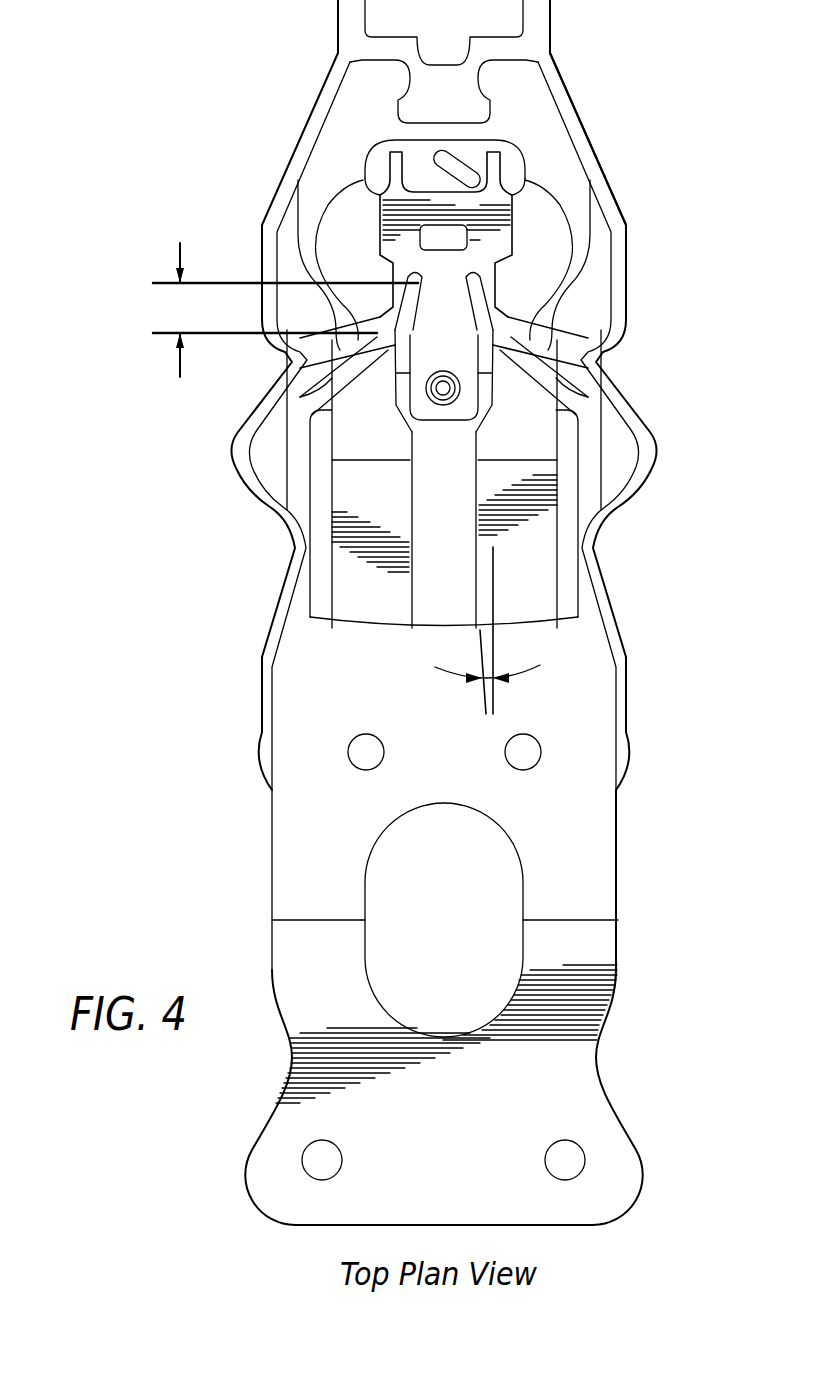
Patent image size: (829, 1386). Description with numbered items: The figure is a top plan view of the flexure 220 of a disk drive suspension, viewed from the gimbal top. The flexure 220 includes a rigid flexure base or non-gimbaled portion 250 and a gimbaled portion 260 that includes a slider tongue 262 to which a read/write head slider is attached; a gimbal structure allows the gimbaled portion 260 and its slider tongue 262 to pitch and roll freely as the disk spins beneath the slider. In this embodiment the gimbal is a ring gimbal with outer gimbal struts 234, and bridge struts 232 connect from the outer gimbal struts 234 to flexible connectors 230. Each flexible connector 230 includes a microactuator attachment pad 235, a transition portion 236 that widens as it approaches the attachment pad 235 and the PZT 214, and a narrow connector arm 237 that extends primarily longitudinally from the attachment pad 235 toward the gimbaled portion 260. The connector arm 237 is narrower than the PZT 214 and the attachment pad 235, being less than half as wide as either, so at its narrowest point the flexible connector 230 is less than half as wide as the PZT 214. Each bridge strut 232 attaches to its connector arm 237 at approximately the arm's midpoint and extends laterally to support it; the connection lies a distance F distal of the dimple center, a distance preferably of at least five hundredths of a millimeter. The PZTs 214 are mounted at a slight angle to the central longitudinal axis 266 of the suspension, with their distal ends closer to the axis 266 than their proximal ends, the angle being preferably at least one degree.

The PZT 214 is at (548, 565).
The flexure 220 is at (240, 551).
The flexible connector 230 is at (502, 385).
The bridge strut 232 is at (540, 320).
The outer gimbal strut 234 is at (598, 180).
The microactuator attachment pad 235 is at (523, 443).
The transition portion 236 is at (517, 413).
The connector arm 237 is at (495, 292).
The non-gimbaled portion 250 is at (272, 858).
The gimbaled portion 260 is at (130, 125).
The slider tongue 262 is at (393, 213).
The central longitudinal axis 266 is at (493, 698).